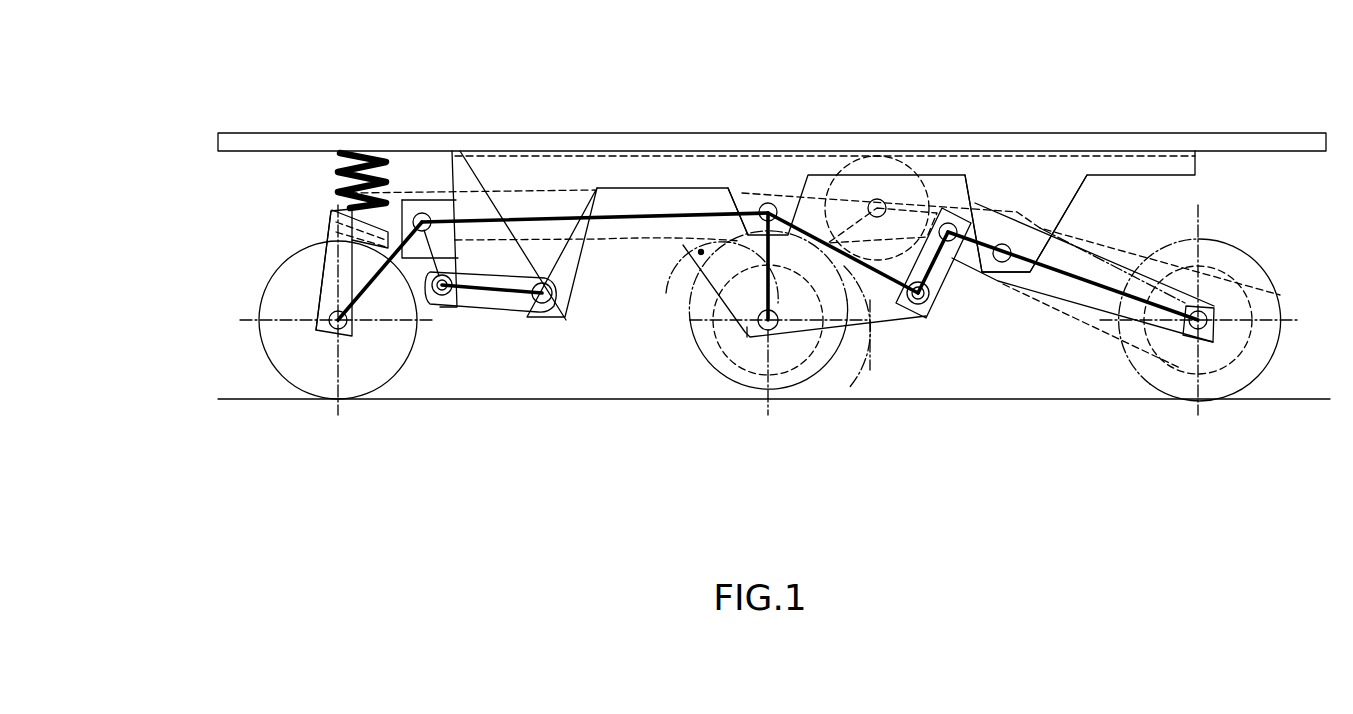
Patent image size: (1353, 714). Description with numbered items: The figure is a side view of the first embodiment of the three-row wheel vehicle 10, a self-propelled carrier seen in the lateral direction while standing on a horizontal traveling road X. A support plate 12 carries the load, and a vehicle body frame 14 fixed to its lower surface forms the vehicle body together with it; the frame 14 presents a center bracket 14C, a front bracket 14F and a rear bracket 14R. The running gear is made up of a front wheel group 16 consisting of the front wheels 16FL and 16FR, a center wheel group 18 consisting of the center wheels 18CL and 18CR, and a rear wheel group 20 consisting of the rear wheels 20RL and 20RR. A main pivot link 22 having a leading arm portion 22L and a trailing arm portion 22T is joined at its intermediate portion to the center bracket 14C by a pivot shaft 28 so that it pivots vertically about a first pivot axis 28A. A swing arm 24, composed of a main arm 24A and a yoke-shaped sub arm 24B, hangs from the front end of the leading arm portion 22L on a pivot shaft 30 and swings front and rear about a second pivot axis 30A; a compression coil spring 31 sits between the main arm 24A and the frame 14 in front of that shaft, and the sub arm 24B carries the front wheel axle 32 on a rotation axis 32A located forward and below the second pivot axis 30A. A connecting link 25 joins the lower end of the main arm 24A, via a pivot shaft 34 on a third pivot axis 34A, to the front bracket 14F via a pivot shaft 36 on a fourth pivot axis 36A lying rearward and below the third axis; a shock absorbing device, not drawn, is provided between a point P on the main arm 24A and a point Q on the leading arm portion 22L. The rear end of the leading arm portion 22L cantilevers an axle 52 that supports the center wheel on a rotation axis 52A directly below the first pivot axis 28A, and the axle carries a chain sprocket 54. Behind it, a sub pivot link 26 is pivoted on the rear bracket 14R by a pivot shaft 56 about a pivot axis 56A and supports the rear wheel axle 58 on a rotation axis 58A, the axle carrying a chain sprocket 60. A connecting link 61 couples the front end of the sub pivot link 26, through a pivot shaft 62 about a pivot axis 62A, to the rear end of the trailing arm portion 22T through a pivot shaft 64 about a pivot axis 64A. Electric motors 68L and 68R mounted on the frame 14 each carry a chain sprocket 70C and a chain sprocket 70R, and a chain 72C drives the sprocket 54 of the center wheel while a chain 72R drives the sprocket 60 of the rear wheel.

The three-row wheel vehicle 10 is at (232, 108).
The support plate 12 is at (1273, 133).
The vehicle body frame 14 is at (1135, 166).
The center bracket 14C is at (742, 212).
The front bracket 14F is at (583, 263).
The rear bracket 14R is at (1042, 205).
The front wheel group 16 is at (274, 333).
The front wheel 16FL is at (274, 310).
The front wheel 16FR is at (284, 352).
The center wheel group 18 is at (803, 353).
The center wheel 18CL is at (823, 353).
The center wheel 18CR is at (823, 368).
The rear wheel group 20 is at (1218, 337).
The rear wheel 20RL is at (1203, 342).
The rear wheel 20RR is at (1228, 392).
The main pivot link 22 is at (628, 186).
The leading arm portion 22L is at (547, 193).
The trailing arm portion 22T is at (882, 318).
The swing arm 24 is at (287, 257).
The main arm 24A is at (352, 215).
The sub arm 24B is at (326, 277).
The connecting link 25 is at (512, 338).
The sub pivot link 26 is at (1073, 209).
The pivot shaft 28 is at (819, 205).
The first pivot axis 28A is at (776, 203).
The pivot shaft 30 is at (572, 159).
The second pivot axis 30A is at (420, 213).
The compression coil spring 31 is at (348, 165).
The axle 32 is at (266, 370).
The rotation axis 32A is at (330, 312).
The pivot shaft 34 is at (412, 303).
The third pivot axis 34A is at (443, 300).
The pivot shaft 36 is at (524, 327).
The fourth pivot axis 36A is at (558, 266).
The axle 52 is at (714, 380).
The rotation axis 52A is at (767, 333).
The chain sprocket 54 is at (789, 370).
The pivot shaft 56 is at (1012, 209).
The pivot axis 56A is at (1004, 243).
The axle 58 is at (1260, 321).
The rotation axis 58A is at (1238, 345).
The chain sprocket 60 is at (1229, 270).
The connecting link 61 is at (937, 224).
The pivot shaft 62 is at (939, 179).
The pivot axis 62A is at (943, 222).
The pivot shaft 64 is at (938, 332).
The pivot axis 64A is at (940, 318).
The electric motor 68L is at (864, 152).
The electric motor 68R is at (842, 170).
The chain sprocket 70C is at (888, 145).
The chain sprocket 70R is at (875, 196).
The chain 72C is at (683, 247).
The chain 72R is at (1063, 316).
The point P is at (504, 307).
The point Q is at (694, 258).
The traveling road X is at (605, 401).